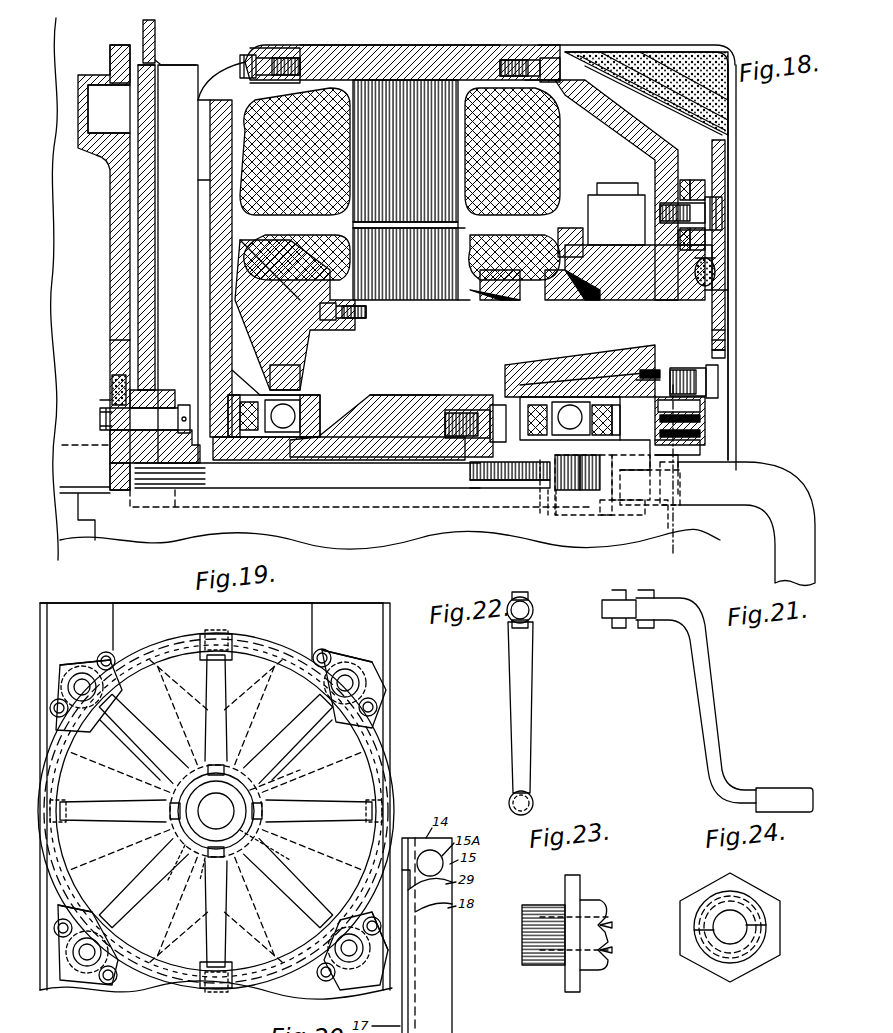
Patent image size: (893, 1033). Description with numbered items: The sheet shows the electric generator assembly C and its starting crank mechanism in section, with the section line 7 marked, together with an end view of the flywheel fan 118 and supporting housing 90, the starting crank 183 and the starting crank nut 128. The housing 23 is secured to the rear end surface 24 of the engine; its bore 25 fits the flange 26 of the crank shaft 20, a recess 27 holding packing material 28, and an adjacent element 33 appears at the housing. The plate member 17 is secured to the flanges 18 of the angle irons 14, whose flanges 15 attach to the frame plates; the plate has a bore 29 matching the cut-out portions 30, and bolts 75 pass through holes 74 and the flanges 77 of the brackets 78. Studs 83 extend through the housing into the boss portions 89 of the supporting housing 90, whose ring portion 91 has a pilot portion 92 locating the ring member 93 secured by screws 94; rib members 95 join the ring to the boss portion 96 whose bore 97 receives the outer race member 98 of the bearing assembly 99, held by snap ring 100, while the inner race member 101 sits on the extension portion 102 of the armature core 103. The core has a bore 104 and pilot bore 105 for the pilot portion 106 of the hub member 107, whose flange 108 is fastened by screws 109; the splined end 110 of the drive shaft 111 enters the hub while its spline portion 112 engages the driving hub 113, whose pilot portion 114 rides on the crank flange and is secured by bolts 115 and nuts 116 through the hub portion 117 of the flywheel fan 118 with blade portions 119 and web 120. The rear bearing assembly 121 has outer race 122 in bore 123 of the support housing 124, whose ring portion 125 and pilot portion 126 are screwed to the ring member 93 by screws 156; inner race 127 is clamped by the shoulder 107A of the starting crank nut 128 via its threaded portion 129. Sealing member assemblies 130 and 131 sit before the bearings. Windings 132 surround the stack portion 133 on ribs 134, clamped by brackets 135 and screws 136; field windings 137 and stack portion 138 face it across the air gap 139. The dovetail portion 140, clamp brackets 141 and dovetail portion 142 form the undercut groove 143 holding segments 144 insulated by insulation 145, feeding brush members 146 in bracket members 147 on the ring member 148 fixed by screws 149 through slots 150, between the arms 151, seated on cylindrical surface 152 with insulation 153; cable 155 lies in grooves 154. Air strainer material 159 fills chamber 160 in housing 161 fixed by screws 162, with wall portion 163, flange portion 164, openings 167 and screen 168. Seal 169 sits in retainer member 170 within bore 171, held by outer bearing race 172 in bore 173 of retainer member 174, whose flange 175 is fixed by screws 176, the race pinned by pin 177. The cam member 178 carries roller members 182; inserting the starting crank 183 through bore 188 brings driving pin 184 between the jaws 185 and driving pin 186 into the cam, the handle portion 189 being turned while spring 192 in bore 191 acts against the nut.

In FIG. 18, the section line 7— 7 is at (658, 553).
In FIG. 19, the angle irons 14 is at (80, 615).
In FIG. 19, the flanges 15 is at (46, 620).
In FIG. 18, the plate member 17 is at (152, 32).
In FIG. 19, the plate member 17 is at (186, 604).
In FIG. 19, the flanges 18 is at (94, 618).
In FIG. 18, the crank shaft 20 is at (92, 446).
In FIG. 18, the housing 23 is at (114, 44).
In FIG. 18, the rear end surface 24 is at (110, 236).
In FIG. 18, the bore 25 is at (112, 388).
In FIG. 18, the flange 26 is at (118, 540).
In FIG. 19, the flange 26 is at (266, 790).
In FIG. 18, the recess 27 is at (110, 346).
In FIG. 18, the packing material 28 is at (110, 372).
In FIG. 18, the bore 29 is at (158, 64).
In FIG. 19, the bore 29 is at (280, 652).
In FIG. 19, the cut-out portion 30 is at (60, 772).
In FIG. 18, the recess 33 is at (92, 102).
In FIG. 19, the holes 74 is at (112, 664).
In FIG. 19, the bolts 75 is at (110, 656).
In FIG. 19, the flanges 77 is at (96, 660).
In FIG. 19, the brackets 78 is at (82, 670).
In FIG. 19, the studs 83 is at (70, 676).
In FIG. 19, the boss portions 89 is at (74, 672).
In FIG. 18, the supporting housing 90 is at (204, 136).
In FIG. 19, the supporting housing 90 is at (258, 985).
In FIG. 18, the ring portion 91 is at (258, 54).
In FIG. 18, the pilot portion 92 is at (280, 92).
In FIG. 18, the ring member 93 is at (296, 46).
In FIG. 18, the screws 94 is at (236, 66).
In FIG. 18, the rib members 95 is at (212, 158).
In FIG. 19, the rib members 95 is at (226, 716).
In FIG. 18, the boss portion 96 is at (262, 388).
In FIG. 19, the boss portion 96 is at (258, 840).
In FIG. 18, the bore 97 is at (290, 395).
In FIG. 19, the bore 97 is at (200, 874).
In FIG. 18, the outer race member 98 is at (288, 376).
In FIG. 18, the bearing assembly 99 is at (280, 434).
In FIG. 18, the snap ring 100 is at (306, 438).
In FIG. 18, the inner race member 101 is at (288, 470).
In FIG. 18, the extension portion 102 is at (250, 462).
In FIG. 18, the armature core 103 is at (384, 416).
In FIG. 18, the bore 104 is at (212, 486).
In FIG. 18, the pilot bore 105 is at (408, 398).
In FIG. 18, the pilot portion 106 is at (458, 462).
In FIG. 18, the hub member 107 is at (520, 400).
In FIG. 18, the washer or shoulder 107A is at (604, 506).
In FIG. 23, the washer or shoulder 107A is at (565, 984).
In FIG. 24, the washer or shoulder 107A is at (716, 878).
In FIG. 18, the flange 108 is at (482, 396).
In FIG. 18, the screws 109 is at (452, 404).
In FIG. 18, the splined end 110 is at (466, 478).
In FIG. 18, the drive shaft 111 is at (326, 480).
In FIG. 18, the spline portion 112 is at (172, 508).
In FIG. 18, the driving hub 113 is at (112, 477).
In FIG. 18, the pilot portion 114 is at (158, 394).
In FIG. 18, the bolts 115 is at (112, 464).
In FIG. 18, the nuts 116 is at (180, 408).
In FIG. 19, the nuts 116 is at (236, 780).
In FIG. 18, the hub portion 117 is at (160, 344).
In FIG. 19, the hub portion 117 is at (156, 790).
In FIG. 18, the flywheel fan 118 is at (140, 212).
In FIG. 19, the flywheel fan 118 is at (154, 656).
In FIG. 18, the blade portions 119 is at (172, 66).
In FIG. 19, the blade portions 119 is at (152, 712).
In FIG. 18, the web or flange 120 is at (146, 193).
In FIG. 19, the web or flange 120 is at (214, 650).
In FIG. 18, the bearing assembly 121 is at (570, 402).
In FIG. 18, the outer race 122 is at (590, 372).
In FIG. 18, the bore 123 is at (565, 370).
In FIG. 18, the support housing 124 is at (716, 322).
In FIG. 18, the ring portion 125 is at (556, 44).
In FIG. 18, the pilot portion 126 is at (538, 94).
In FIG. 18, the inner race 127 is at (596, 400).
In FIG. 18, the starting crank nut 128 is at (616, 510).
In FIG. 23, the starting crank nut 128 is at (588, 898).
In FIG. 24, the starting crank nut 128 is at (748, 880).
In FIG. 18, the threaded portion 129 is at (576, 492).
In FIG. 23, the threaded portion 129 is at (540, 900).
In FIG. 18, the sealing member assembly 130 is at (536, 402).
In FIG. 18, the sealing member assembly 131 is at (242, 438).
In FIG. 18, the windings 132 is at (506, 232).
In FIG. 18, the stack portion 133 is at (380, 302).
In FIG. 18, the ribs 134 is at (345, 358).
In FIG. 18, the clamp brackets 135 is at (290, 326).
In FIG. 18, the screws 136 is at (345, 322).
In FIG. 18, the electrical windings 137 is at (280, 218).
In FIG. 18, the stack portion 138 is at (340, 46).
In FIG. 18, the air gap 139 is at (352, 226).
In FIG. 18, the dovetail portion 140 is at (560, 282).
In FIG. 18, the clamp brackets 141 is at (728, 292).
In FIG. 18, the dovetail portion 142 is at (726, 312).
In FIG. 18, the undercut groove 143 is at (560, 292).
In FIG. 18, the segments 144 is at (706, 256).
In FIG. 18, the insulation 145 is at (545, 318).
In FIG. 18, the brush members 146 is at (628, 184).
In FIG. 18, the bracket members 147 is at (592, 212).
In FIG. 18, the ring member 148 is at (704, 196).
In FIG. 18, the screws 149 is at (714, 200).
In FIG. 18, the elongated slots 150 is at (690, 182).
In FIG. 18, the ribs or arms 151 is at (650, 114).
In FIG. 18, the cylindrical surface 152 is at (700, 240).
In FIG. 18, the insulation 153 is at (682, 182).
In FIG. 18, the grooves 154 is at (716, 276).
In FIG. 18, the cable 155 is at (718, 266).
In FIG. 18, the screws 156 is at (580, 44).
In FIG. 18, the air strainer material 159 is at (720, 46).
In FIG. 18, the chamber 160 is at (662, 44).
In FIG. 18, the housing 161 is at (712, 44).
In FIG. 18, the screws 162 is at (548, 44).
In FIG. 18, the wall portion 163 is at (735, 332).
In FIG. 18, the annular flange portion 164 is at (738, 350).
In FIG. 18, the openings 167 is at (600, 74).
In FIG. 18, the wire mesh screen 168 is at (628, 80).
In FIG. 18, the sealing member assembly 169 is at (600, 400).
In FIG. 18, the retainer member 170 is at (628, 460).
In FIG. 18, the bore 171 is at (648, 380).
In FIG. 18, the outer bearing race 172 is at (690, 422).
In FIG. 18, the bore 173 is at (706, 410).
In FIG. 18, the retainer member 174 is at (690, 432).
In FIG. 18, the flange 175 is at (708, 400).
In FIG. 18, the screws 176 is at (710, 372).
In FIG. 18, the pin 177 is at (650, 372).
In FIG. 18, the cam member 178 is at (694, 460).
In FIG. 18, the roller members 182 is at (700, 442).
In FIG. 18, the starting crank 183 is at (770, 466).
In FIG. 22, the starting crank 183 is at (534, 690).
In FIG. 21, the starting crank 183 is at (722, 672).
In FIG. 18, the driving pin 184 is at (632, 520).
In FIG. 22, the driving pin 184 is at (522, 596).
In FIG. 21, the driving pin 184 is at (620, 636).
In FIG. 18, the jaws 185 is at (642, 520).
In FIG. 23, the jaws 185 is at (604, 916).
In FIG. 24, the jaws 185 is at (756, 912).
In FIG. 18, the driving pin 186 is at (686, 504).
In FIG. 22, the driving pin 186 is at (516, 592).
In FIG. 21, the driving pin 186 is at (644, 630).
In FIG. 18, the bore 188 is at (650, 470).
In FIG. 21, the handle portion 189 is at (786, 786).
In FIG. 18, the bore 191 is at (550, 488).
In FIG. 18, the spring 192 is at (556, 506).
In FIG. 18, the electric generator assembly C is at (388, 46).